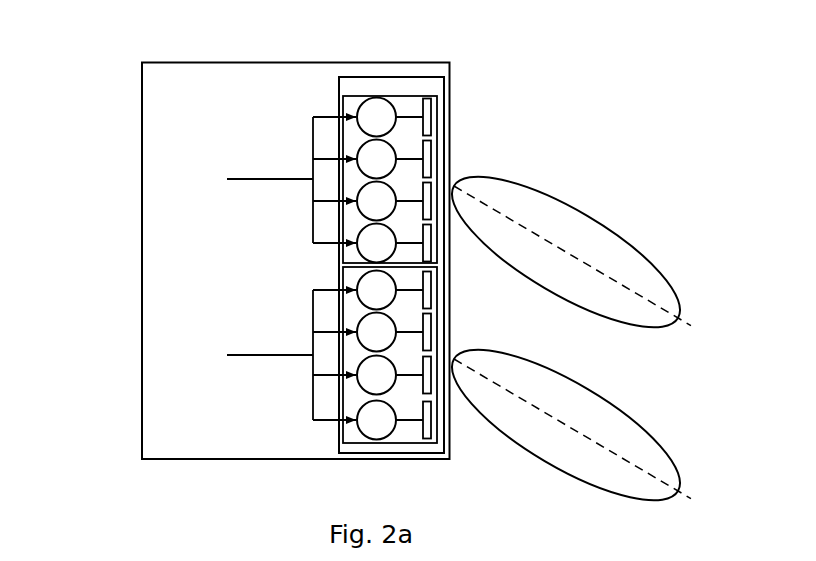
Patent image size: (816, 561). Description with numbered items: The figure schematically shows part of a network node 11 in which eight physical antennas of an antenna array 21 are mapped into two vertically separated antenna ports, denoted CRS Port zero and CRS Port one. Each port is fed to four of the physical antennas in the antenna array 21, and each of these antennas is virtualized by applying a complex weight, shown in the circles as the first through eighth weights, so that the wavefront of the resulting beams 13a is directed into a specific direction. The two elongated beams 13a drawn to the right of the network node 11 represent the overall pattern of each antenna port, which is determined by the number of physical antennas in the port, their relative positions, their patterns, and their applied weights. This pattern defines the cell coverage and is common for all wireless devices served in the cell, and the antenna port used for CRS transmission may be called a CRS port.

The network node 11 is at (142, 89).
The antenna array 21 is at (393, 77).
The beam 13a is at (607, 224).